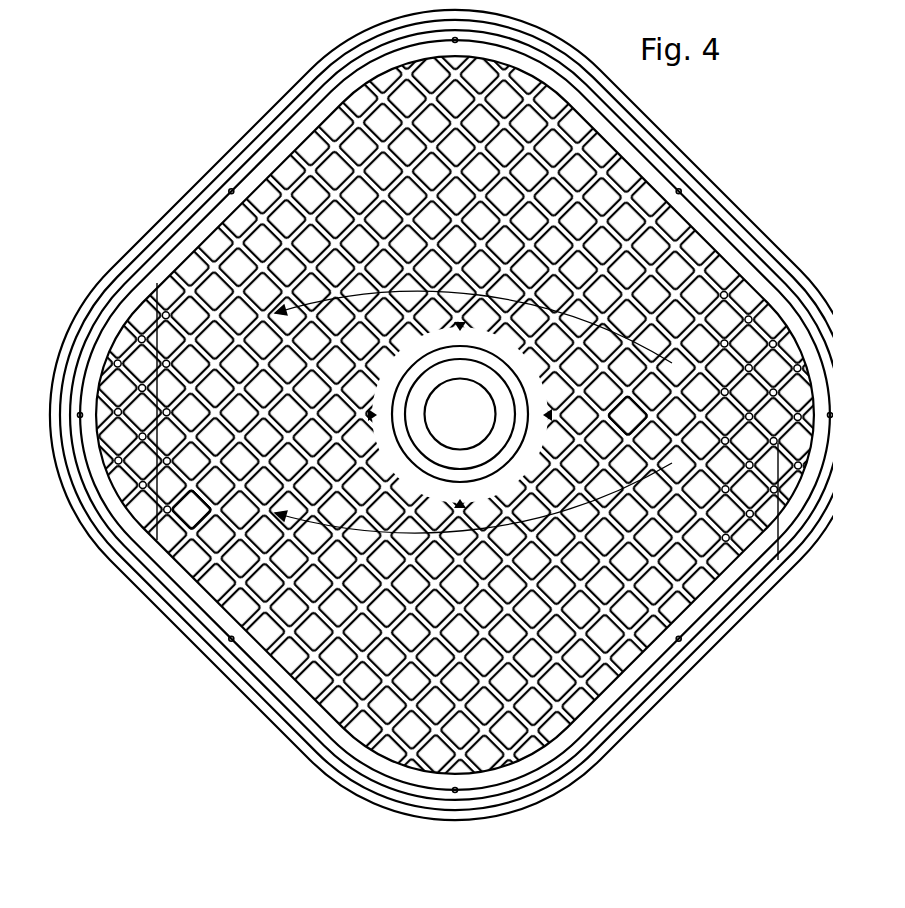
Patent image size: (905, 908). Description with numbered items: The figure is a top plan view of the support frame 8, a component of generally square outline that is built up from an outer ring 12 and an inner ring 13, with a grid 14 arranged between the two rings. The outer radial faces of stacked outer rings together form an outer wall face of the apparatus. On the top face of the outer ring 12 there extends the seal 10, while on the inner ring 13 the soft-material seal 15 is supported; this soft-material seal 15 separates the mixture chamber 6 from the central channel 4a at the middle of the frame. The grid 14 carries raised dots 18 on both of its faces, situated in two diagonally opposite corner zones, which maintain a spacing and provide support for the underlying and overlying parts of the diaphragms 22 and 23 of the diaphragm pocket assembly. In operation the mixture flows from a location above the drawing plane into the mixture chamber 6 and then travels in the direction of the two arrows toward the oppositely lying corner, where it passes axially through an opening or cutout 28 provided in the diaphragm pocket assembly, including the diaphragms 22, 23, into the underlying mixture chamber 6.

The support frame 8 is at (455, 415).
The seal 10 is at (742, 228).
The outer ring 12 is at (778, 249).
The grid 14 is at (330, 687).
The mixture chamber 6 is at (634, 426).
The raised dots 18 is at (120, 352).
The opening (cutout) 28 is at (137, 462).
The diaphragm 22 is at (172, 585).
The diaphragm 23 is at (196, 513).
The central channel 4a is at (460, 414).
The soft-material seal 15 is at (408, 442).
The inner ring 13 is at (487, 452).